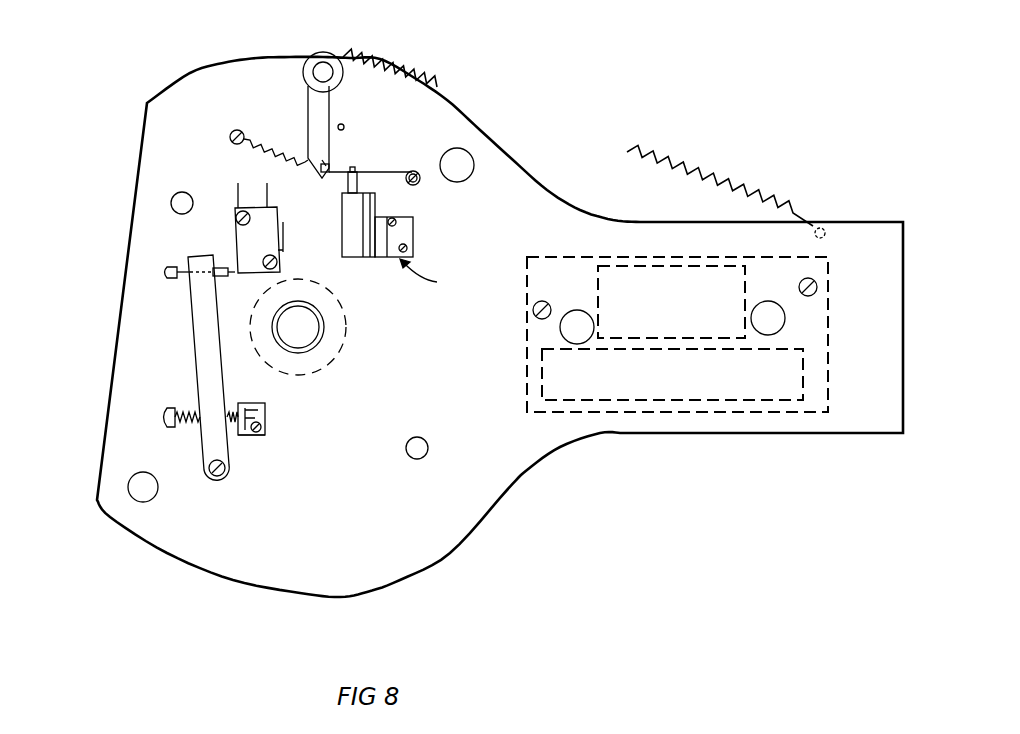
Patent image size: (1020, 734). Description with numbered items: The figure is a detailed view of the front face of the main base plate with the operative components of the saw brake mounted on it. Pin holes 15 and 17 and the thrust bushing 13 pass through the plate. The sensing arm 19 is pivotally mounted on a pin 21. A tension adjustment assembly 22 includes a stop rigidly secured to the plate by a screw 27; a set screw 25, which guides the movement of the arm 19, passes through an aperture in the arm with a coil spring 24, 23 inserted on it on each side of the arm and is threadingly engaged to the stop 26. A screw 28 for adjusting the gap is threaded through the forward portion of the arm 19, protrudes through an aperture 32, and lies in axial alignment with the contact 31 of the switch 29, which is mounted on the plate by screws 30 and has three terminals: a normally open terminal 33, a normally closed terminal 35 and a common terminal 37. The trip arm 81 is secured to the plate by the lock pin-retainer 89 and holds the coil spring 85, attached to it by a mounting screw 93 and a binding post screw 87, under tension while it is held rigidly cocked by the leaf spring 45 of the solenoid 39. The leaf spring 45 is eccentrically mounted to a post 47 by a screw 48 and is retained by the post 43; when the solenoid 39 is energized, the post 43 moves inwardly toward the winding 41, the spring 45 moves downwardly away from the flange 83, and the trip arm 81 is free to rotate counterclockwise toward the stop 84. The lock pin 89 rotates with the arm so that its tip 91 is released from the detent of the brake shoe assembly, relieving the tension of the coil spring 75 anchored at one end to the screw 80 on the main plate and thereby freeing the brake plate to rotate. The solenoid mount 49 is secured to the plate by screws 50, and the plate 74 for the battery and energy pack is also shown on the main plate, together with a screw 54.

The thrust bushing 13 is at (348, 330).
The pin hole 15 is at (171, 202).
The pin hole 17 is at (474, 166).
The sensing arm 19 is at (193, 327).
The pin 21 is at (221, 477).
The tension adjustment assembly 22 is at (245, 436).
The return spring 23 is at (233, 413).
The bias spring 24 is at (183, 413).
The set screw 25 is at (162, 417).
The stop 26 is at (264, 410).
The screw 27 is at (266, 424).
The screw 28 is at (165, 275).
The switch 29 is at (258, 236).
The screws 30 is at (237, 219).
The contact 31 is at (142, 280).
The aperture 32 is at (197, 275).
The normally open terminal 33 is at (238, 193).
The normally closed terminal 35 is at (268, 193).
The common terminal 37 is at (287, 232).
The solenoid 39 is at (432, 278).
The winding 41 is at (352, 243).
The post 43 is at (358, 184).
The leaf spring 45 is at (340, 170).
The post 47 is at (529, 180).
The screw 48 is at (423, 184).
The solenoid mount 49 is at (400, 232).
The screws 50 is at (394, 219).
The battery pack screw 54 is at (819, 285).
The plate 74 is at (808, 338).
The coil spring 75 is at (665, 158).
The screw 80 is at (823, 228).
The trip arm 81 is at (308, 118).
The flange 83 is at (335, 170).
The stop 84 is at (344, 124).
The coil spring 85 is at (268, 154).
The binding post screw 87 is at (231, 131).
The lock pin-retainer 89 is at (320, 62).
The tip 91 is at (330, 156).
The mounting screw 93 is at (311, 164).